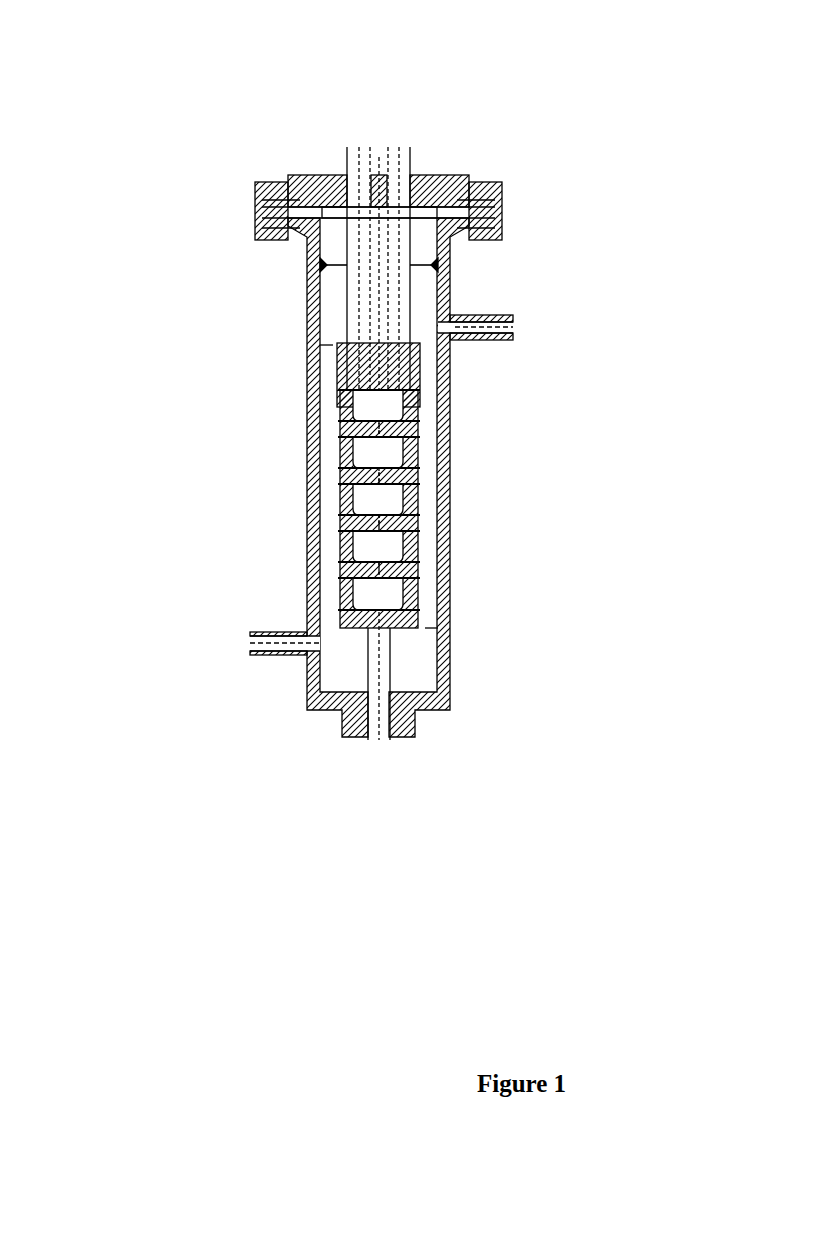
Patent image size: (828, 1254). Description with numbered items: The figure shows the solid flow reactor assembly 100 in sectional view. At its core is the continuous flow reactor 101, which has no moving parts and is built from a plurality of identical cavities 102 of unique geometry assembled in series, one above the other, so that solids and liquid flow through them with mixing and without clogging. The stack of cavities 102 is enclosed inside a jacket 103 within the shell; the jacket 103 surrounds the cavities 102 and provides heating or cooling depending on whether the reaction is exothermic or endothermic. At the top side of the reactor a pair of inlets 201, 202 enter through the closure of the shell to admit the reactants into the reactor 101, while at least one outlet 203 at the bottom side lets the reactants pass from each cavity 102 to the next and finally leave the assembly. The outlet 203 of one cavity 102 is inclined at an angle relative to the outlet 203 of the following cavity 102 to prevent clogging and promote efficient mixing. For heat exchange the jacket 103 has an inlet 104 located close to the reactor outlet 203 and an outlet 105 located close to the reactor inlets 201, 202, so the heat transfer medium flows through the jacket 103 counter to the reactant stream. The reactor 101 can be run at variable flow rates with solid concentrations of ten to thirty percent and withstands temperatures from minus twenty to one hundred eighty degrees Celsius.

The solid flow reactor assembly 100 is at (371, 438).
The continuous flow reactor 101 is at (368, 485).
The cavities 102 is at (387, 493).
The jacket 103 is at (453, 400).
The inlet 104 is at (232, 643).
The outlet 105 is at (527, 325).
The inlet 201 is at (350, 127).
The inlet 202 is at (401, 127).
The outlet 203 is at (379, 750).